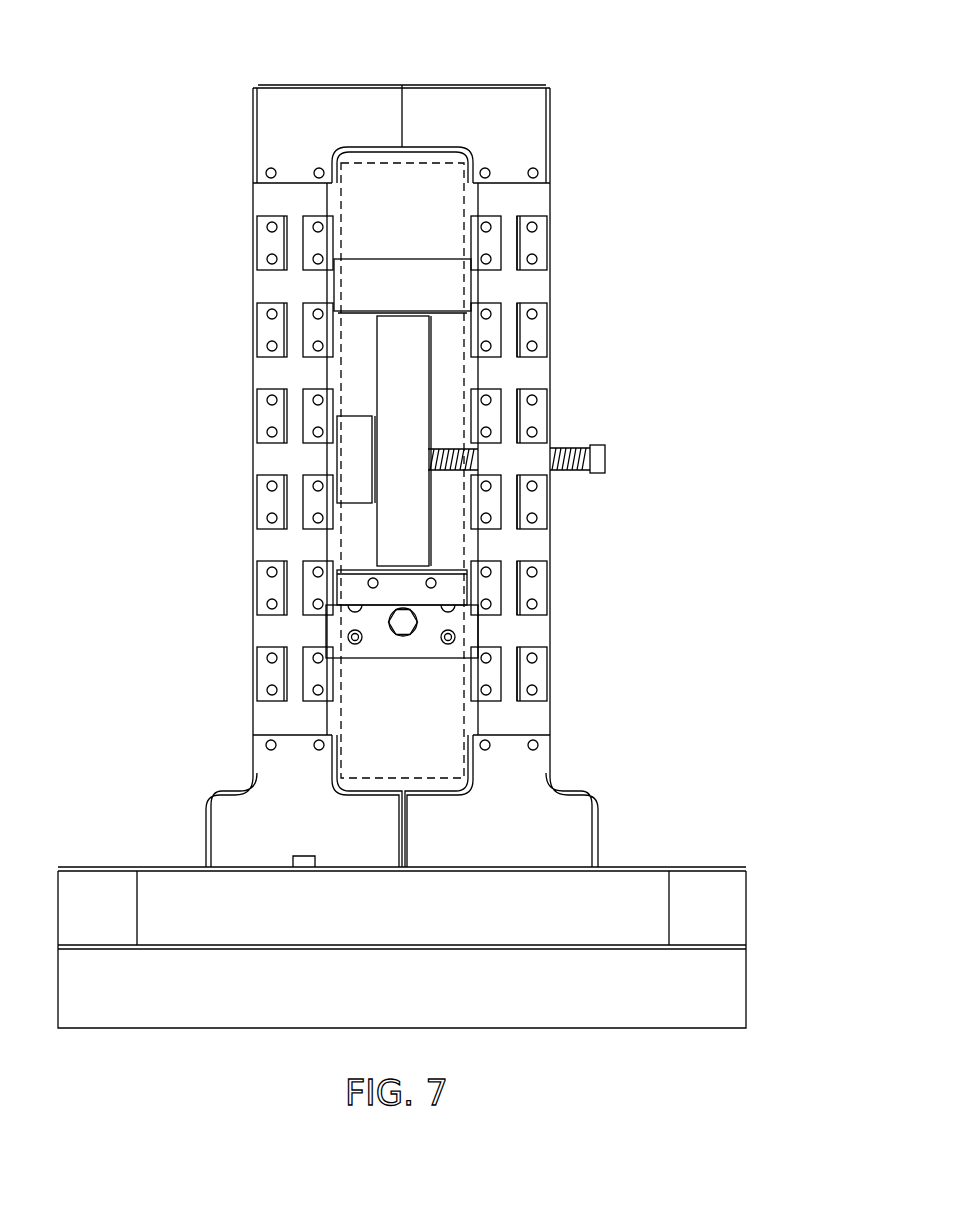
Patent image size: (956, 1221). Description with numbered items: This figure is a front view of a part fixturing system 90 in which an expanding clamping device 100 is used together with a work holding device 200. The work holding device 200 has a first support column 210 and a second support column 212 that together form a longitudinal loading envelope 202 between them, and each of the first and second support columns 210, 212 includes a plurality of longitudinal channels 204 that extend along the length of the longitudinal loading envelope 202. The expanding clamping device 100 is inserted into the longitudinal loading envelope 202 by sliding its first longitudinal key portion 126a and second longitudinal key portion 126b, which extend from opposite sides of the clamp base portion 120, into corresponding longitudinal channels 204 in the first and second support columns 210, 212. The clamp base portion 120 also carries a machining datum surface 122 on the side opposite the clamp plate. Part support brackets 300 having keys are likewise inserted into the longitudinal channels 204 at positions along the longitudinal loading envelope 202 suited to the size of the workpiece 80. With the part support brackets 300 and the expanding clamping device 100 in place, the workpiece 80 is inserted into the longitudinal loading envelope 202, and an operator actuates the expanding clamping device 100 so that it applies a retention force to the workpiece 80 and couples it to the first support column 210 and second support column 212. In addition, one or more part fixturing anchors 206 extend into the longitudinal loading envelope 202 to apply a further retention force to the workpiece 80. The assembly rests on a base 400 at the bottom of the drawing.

The work holding device 200 is at (297, 81).
The part fixturing system 90 is at (603, 61).
The longitudinal loading envelope 202 is at (424, 163).
The part support brackets 300 is at (333, 282).
The first support column 210 is at (245, 368).
The second support column 212 is at (558, 330).
The part fixturing anchor 206 is at (605, 458).
The workpiece 80 is at (415, 525).
The second longitudinal key portion 126b is at (326, 625).
The first longitudinal key portion 126a is at (478, 625).
The clamp base portion 120 is at (490, 639).
The expanding clamping device 100 is at (409, 672).
The machining datum surface 122 is at (437, 660).
The longitudinal channels 204 is at (336, 721).
The base 400 is at (746, 987).